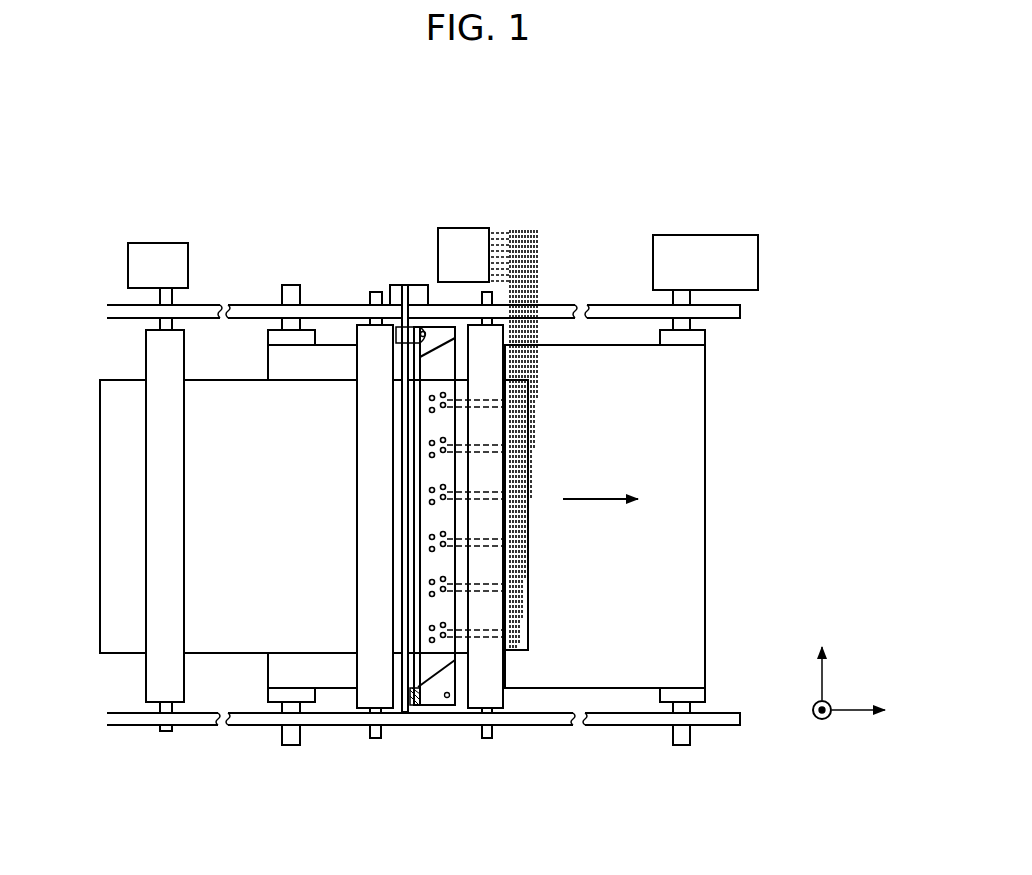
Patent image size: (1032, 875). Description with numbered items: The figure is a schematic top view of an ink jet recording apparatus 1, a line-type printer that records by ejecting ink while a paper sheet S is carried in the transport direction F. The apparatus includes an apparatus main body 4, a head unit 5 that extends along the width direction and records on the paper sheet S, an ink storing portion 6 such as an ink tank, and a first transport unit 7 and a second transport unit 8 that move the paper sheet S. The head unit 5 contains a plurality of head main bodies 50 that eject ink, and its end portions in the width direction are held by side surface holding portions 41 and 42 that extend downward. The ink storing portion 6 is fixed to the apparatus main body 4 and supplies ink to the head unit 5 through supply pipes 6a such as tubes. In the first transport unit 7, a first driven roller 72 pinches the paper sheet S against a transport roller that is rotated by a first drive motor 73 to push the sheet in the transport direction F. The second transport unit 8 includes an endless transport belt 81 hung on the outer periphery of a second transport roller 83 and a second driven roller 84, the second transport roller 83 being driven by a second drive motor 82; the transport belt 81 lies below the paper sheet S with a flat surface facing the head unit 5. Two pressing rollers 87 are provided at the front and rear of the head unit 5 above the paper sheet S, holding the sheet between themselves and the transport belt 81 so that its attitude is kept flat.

The recording apparatus 1 is at (825, 160).
The apparatus main body 4 is at (423, 525).
The side surface holding portion 41 is at (343, 312).
The side surface holding portion 42 is at (247, 718).
The head unit 5 is at (427, 707).
The head main body 50 is at (408, 718).
The ink storing portion 6 is at (462, 233).
The supply pipe 6a is at (520, 232).
The first transport unit 7 is at (112, 450).
The first driven roller 72 is at (150, 360).
The first drive motor 73 is at (162, 248).
The second transport unit 8 is at (639, 449).
The transport belt 81 is at (562, 362).
The second drive motor 82 is at (713, 237).
The second transport roller 83 is at (705, 335).
The second driven roller 84 is at (275, 335).
The pressing roller 87 is at (360, 698).
The paper sheet S is at (110, 497).
The transport direction F is at (600, 482).